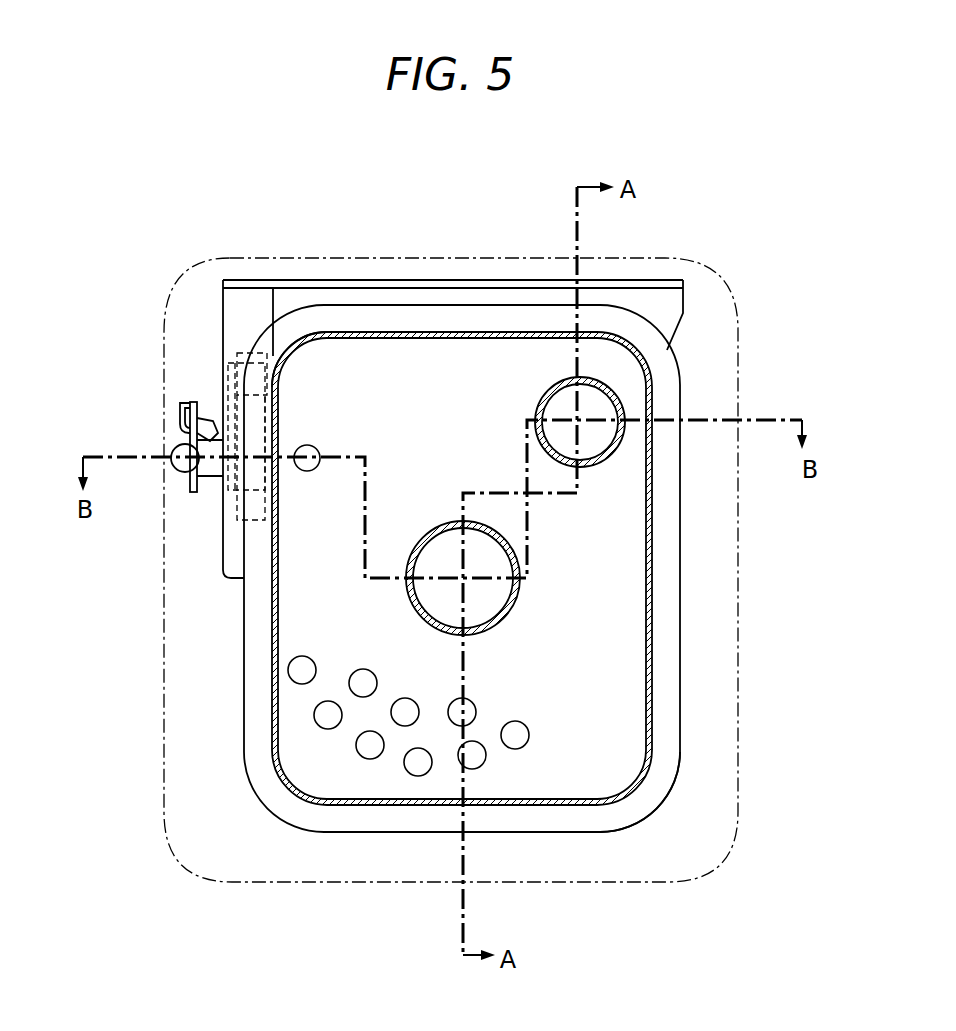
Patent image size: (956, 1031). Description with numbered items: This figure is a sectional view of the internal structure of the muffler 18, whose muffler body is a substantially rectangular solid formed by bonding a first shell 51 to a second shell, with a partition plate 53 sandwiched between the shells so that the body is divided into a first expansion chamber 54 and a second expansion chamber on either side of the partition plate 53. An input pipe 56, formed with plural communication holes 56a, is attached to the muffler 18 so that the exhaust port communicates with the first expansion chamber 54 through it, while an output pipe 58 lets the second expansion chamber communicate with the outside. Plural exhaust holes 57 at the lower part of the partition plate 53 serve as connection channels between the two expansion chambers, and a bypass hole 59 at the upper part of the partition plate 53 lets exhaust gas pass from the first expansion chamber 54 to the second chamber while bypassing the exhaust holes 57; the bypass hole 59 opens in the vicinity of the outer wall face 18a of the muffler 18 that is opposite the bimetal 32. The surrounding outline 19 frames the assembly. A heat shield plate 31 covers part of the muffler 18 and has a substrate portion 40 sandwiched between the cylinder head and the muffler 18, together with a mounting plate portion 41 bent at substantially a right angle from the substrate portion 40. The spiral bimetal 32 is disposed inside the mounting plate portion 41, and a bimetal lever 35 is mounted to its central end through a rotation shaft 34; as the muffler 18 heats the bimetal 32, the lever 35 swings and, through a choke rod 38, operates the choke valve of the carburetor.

The muffler 18 is at (257, 790).
The outer wall face 18a is at (272, 398).
The housing outline 19 is at (483, 256).
The heat shield plate 31 is at (417, 268).
The bimetal 32 is at (215, 528).
The rotation shaft 34 is at (180, 452).
The bimetal lever 35 is at (191, 485).
The choke rod 38 is at (185, 402).
The substrate portion 40 is at (683, 320).
The mounting plate portion 41 is at (222, 325).
The first shell 51 is at (272, 675).
The partition plate 53 is at (607, 698).
The first expansion chamber 54 is at (582, 750).
The input pipe 56 is at (527, 615).
The communication holes 56a is at (518, 584).
The exhaust holes 57 is at (330, 716).
The output pipe 58 is at (627, 388).
The bypass hole 59 is at (321, 452).